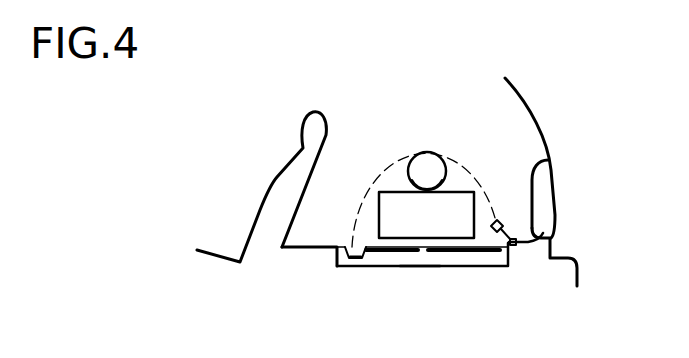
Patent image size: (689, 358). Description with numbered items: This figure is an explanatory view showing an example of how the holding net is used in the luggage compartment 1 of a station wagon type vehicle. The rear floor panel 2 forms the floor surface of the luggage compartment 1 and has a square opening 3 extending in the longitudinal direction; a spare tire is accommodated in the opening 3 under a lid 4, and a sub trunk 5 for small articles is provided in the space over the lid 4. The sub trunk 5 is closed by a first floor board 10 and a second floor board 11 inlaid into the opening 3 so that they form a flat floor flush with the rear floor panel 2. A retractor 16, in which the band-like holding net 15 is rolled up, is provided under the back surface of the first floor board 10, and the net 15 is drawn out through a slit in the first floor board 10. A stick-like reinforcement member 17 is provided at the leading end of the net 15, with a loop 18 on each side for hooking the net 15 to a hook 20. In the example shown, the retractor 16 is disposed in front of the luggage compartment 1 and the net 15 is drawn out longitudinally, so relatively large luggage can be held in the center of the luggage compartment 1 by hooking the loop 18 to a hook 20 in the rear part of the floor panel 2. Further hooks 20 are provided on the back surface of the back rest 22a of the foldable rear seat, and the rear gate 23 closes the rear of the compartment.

The luggage compartment 1 is at (408, 110).
The rear floor panel 2 is at (303, 248).
The opening 3 is at (510, 268).
The lid 4 is at (497, 267).
The sub trunk 5 is at (420, 266).
The first floor board 10 is at (385, 253).
The second floor board 11 is at (467, 266).
The holding net 15 is at (456, 153).
The retractor 16 is at (352, 259).
The reinforcement member 17 is at (502, 221).
The loop 18 is at (517, 240).
The hook 20 is at (548, 238).
The back rest 22a is at (311, 140).
The rear gate 23 is at (527, 110).